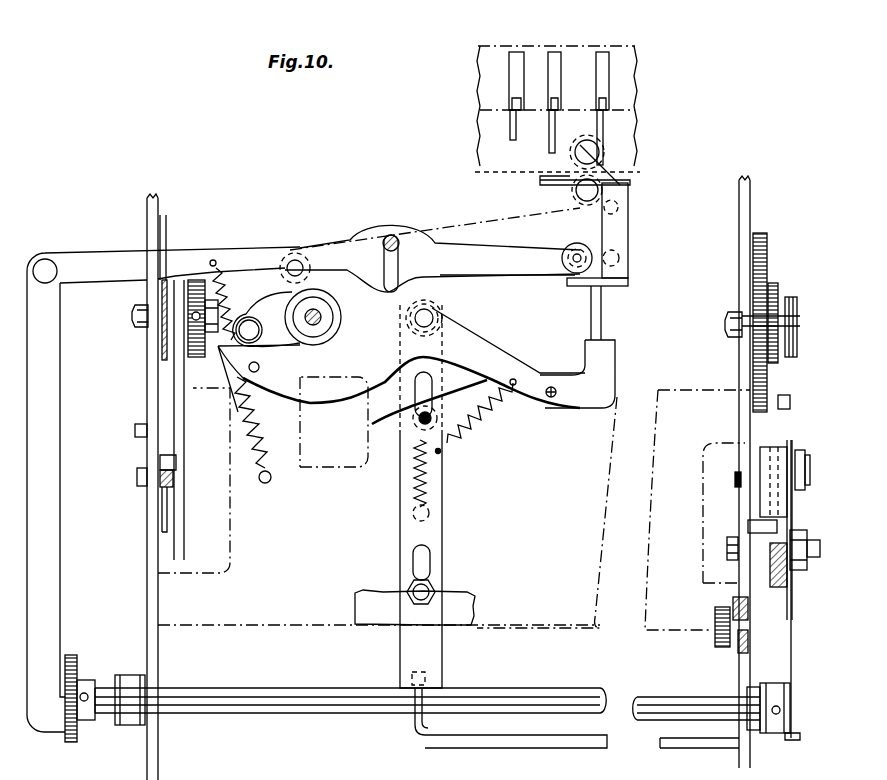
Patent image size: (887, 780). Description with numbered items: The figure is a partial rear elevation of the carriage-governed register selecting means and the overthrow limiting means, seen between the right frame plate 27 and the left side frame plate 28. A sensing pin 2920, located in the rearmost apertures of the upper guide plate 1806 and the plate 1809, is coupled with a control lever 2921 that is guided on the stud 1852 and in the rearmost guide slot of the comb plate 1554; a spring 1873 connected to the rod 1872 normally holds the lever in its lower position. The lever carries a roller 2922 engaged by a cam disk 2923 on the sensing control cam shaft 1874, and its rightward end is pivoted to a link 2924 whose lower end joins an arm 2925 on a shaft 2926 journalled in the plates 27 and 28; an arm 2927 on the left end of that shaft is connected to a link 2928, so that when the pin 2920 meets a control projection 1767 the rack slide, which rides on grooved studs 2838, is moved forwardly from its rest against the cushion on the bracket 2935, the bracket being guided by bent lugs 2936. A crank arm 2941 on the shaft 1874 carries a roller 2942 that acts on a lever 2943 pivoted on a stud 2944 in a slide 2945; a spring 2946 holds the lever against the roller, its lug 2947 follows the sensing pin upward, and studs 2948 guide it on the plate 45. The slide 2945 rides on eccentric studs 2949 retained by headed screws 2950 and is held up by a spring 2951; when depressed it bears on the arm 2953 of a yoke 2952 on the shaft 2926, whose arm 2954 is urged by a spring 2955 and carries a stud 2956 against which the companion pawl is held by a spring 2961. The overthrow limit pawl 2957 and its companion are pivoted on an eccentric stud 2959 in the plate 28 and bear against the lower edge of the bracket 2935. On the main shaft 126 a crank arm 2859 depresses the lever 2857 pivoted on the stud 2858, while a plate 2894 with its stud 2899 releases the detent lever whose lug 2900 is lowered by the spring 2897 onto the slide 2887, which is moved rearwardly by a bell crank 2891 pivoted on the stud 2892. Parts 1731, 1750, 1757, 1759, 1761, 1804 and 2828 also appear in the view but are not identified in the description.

The right frame plate 27 is at (147, 200).
The left side frame plate 28 is at (750, 186).
The plate 45 is at (372, 614).
The main shaft 126 is at (135, 316).
The comb plate 1554 is at (168, 227).
The platen frame 1731 is at (571, 45).
The key levers 1750 is at (608, 70).
The roller 1757 is at (640, 141).
The plate 1759 is at (645, 172).
The roller 1761 is at (580, 195).
The control projection 1767 is at (554, 130).
The bracket 1804 is at (628, 230).
The upper guide plate 1806 is at (540, 183).
The guide plate 1809 is at (630, 284).
The stud 1852 is at (393, 230).
The rod 1872 is at (270, 482).
The spring 1873 is at (249, 436).
The automatic sensing control cam shaft 1874 is at (325, 317).
The plate 2828 is at (166, 480).
The grooved studs 2838 is at (797, 443).
The lever 2857 is at (784, 400).
The stud 2858 is at (765, 326).
The crank arm 2859 is at (773, 287).
The slide 2887 is at (176, 461).
The bell crank lever 2891 is at (173, 478).
The stud 2892 is at (166, 335).
The plate 2894 is at (183, 408).
The tension spring 2897 is at (168, 522).
The stud 2899 is at (168, 414).
The lug 2900 is at (175, 428).
The sensing pin 2920 is at (595, 245).
The control lever 2921 is at (522, 256).
The roller 2922 is at (298, 248).
The cam disk 2923 is at (228, 308).
The link 2924 is at (50, 387).
The arm 2925 is at (93, 744).
The shaft 2926 is at (225, 702).
The arm 2927 is at (800, 740).
The link 2928 is at (800, 532).
The bracket 2935 is at (773, 450).
The lugs 2936 is at (735, 475).
The crank arm 2941 is at (326, 345).
The roller 2942 is at (275, 378).
The lever 2943 is at (470, 338).
The stud 2944 is at (440, 315).
The slide 2945 is at (442, 514).
The tension spring 2946 is at (470, 414).
The lug 2947 is at (583, 345).
The studs 2948 is at (257, 370).
The studs 2949 is at (438, 410).
The headed screws 2950 is at (373, 421).
The tension spring 2951 is at (428, 458).
The yoke member 2952 is at (660, 740).
The arm 2953 is at (414, 716).
The arm 2954 is at (736, 690).
The tension spring 2955 is at (715, 620).
The stud 2956 is at (752, 645).
The overthrow limit pawl 2957 is at (750, 525).
The eccentric stud 2959 is at (727, 548).
The tension spring 2961 is at (745, 590).